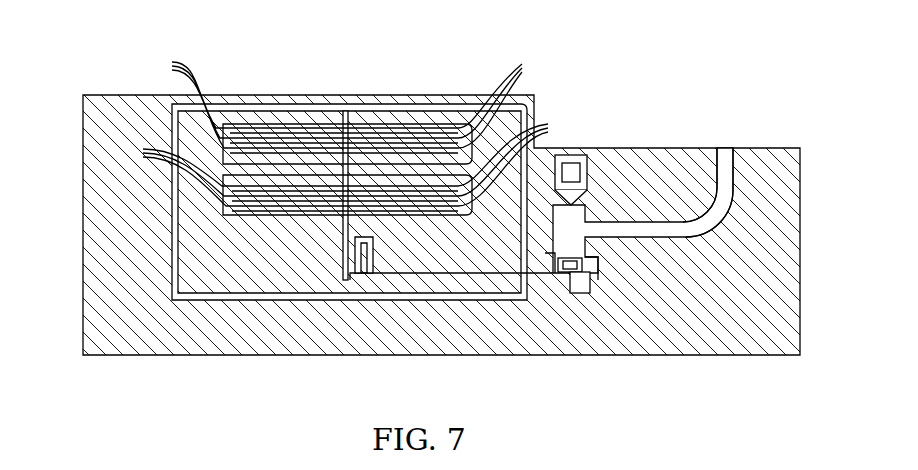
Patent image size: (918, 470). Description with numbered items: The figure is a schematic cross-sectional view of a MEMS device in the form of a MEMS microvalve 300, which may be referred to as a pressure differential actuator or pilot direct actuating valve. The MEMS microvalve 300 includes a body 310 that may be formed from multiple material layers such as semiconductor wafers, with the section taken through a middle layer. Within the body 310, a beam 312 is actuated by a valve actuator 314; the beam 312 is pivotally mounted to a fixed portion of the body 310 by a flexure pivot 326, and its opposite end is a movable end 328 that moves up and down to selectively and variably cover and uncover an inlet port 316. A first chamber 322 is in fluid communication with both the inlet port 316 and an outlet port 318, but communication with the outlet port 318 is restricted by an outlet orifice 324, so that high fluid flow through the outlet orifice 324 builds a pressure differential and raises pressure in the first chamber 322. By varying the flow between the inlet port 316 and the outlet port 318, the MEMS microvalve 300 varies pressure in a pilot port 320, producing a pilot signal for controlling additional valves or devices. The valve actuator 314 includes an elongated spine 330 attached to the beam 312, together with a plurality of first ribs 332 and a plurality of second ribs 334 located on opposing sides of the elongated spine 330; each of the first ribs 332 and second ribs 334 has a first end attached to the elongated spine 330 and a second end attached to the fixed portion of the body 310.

The MEMS microvalve 300 is at (246, 62).
The body 310 is at (142, 321).
The beam 312 is at (492, 285).
The valve actuator 314 is at (290, 228).
The inlet port 316 is at (592, 288).
The outlet port 318 is at (584, 165).
The pilot port 320 is at (726, 147).
The first chamber 322 is at (556, 232).
The outlet orifice 324 is at (575, 196).
The flexure pivot 326 is at (372, 268).
The movable end 328 is at (566, 283).
The elongated spine 330 is at (348, 128).
The first ribs 332 is at (279, 136).
The second ribs 334 is at (521, 134).